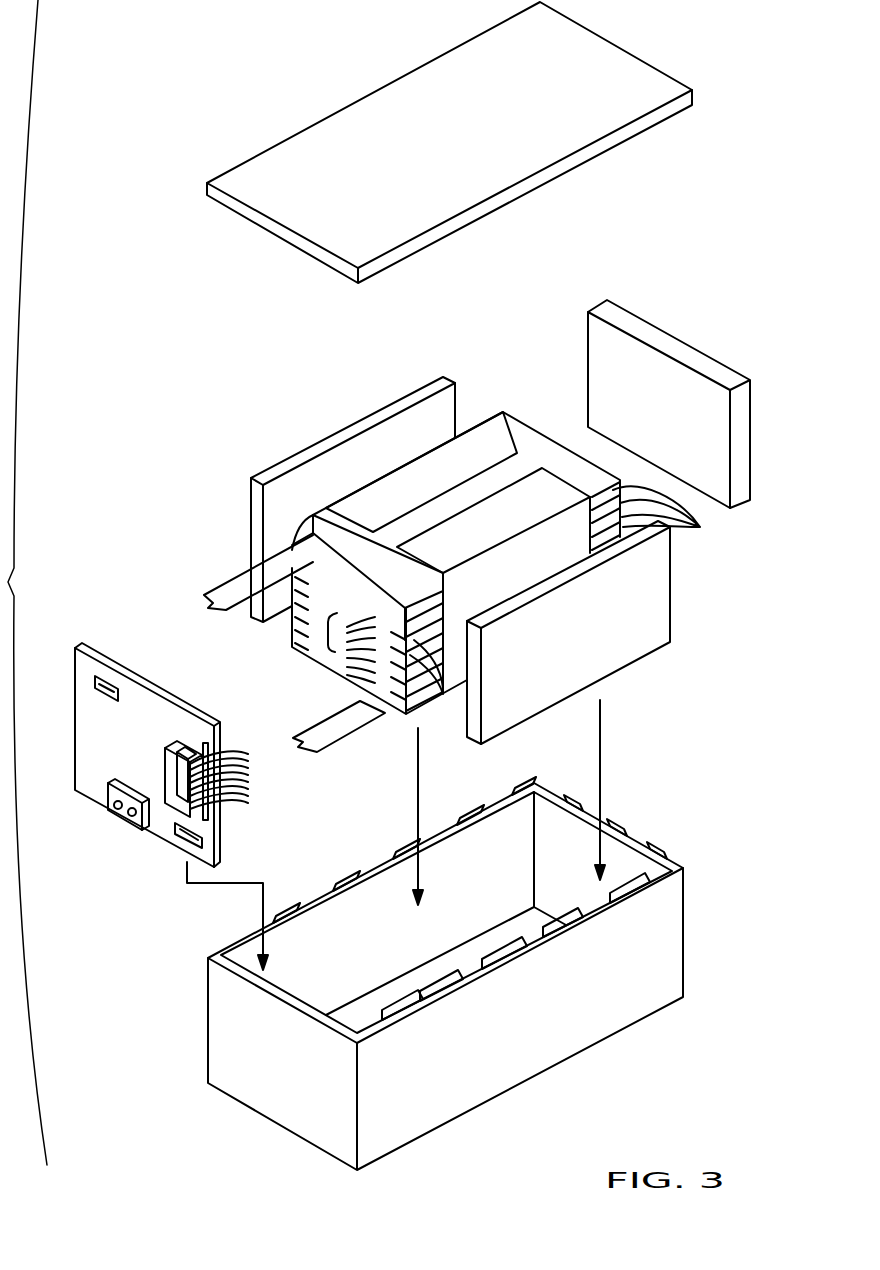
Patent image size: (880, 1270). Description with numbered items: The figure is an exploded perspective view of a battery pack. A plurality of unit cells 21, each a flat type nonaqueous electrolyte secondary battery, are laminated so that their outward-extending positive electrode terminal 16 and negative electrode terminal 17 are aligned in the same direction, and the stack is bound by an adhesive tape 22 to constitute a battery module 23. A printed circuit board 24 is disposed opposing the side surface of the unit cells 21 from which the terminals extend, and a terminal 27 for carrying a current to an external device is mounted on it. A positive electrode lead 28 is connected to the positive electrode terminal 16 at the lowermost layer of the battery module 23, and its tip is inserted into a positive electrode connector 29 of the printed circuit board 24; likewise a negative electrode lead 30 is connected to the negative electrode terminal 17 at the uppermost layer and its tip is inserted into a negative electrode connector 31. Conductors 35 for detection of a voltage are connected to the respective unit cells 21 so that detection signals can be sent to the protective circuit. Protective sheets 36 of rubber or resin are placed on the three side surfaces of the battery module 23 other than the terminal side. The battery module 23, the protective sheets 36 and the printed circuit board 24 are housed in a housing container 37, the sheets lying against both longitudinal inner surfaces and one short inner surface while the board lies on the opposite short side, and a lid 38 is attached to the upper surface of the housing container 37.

The positive electrode terminal 16 is at (375, 603).
The negative electrode terminal 17 is at (303, 540).
The unit cell 21 is at (712, 527).
The adhesive tape 22 is at (532, 497).
The battery module 23 is at (397, 470).
The printed circuit board 24 is at (108, 655).
The terminal for carrying a current to an external device 27 is at (130, 823).
The positive electrode lead 28 is at (337, 737).
The positive electrode connector 29 is at (206, 841).
The negative electrode lead 30 is at (223, 585).
The negative electrode connector 31 is at (113, 688).
The conductors for detection of a voltage 35 is at (328, 644).
The protective sheet 36 is at (317, 453).
The housing container 37 is at (672, 940).
The lid 38 is at (633, 77).